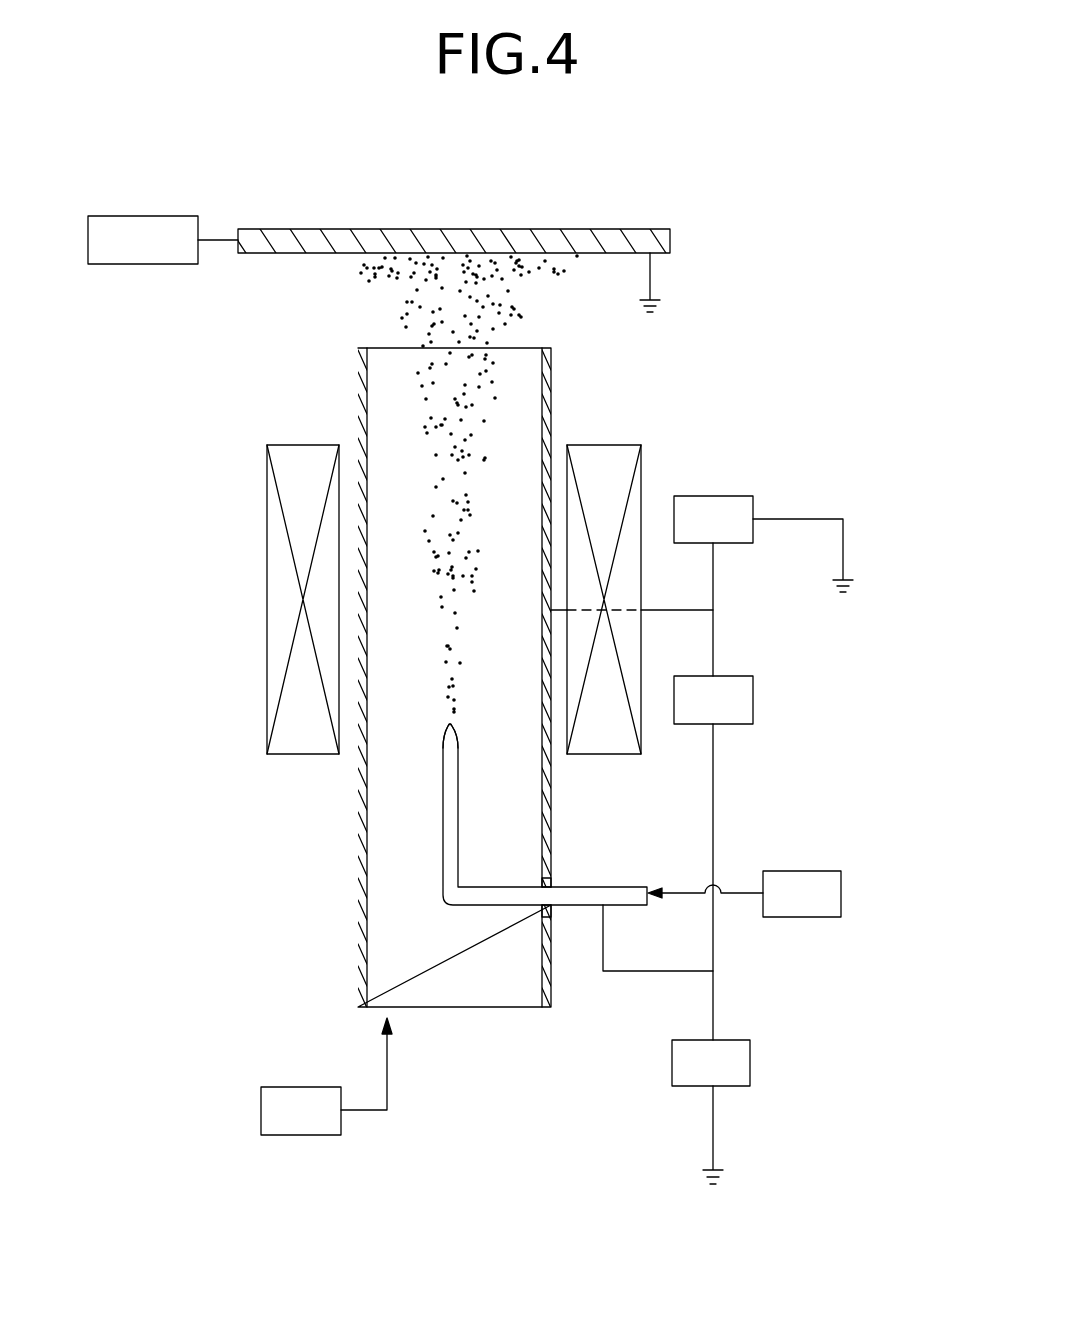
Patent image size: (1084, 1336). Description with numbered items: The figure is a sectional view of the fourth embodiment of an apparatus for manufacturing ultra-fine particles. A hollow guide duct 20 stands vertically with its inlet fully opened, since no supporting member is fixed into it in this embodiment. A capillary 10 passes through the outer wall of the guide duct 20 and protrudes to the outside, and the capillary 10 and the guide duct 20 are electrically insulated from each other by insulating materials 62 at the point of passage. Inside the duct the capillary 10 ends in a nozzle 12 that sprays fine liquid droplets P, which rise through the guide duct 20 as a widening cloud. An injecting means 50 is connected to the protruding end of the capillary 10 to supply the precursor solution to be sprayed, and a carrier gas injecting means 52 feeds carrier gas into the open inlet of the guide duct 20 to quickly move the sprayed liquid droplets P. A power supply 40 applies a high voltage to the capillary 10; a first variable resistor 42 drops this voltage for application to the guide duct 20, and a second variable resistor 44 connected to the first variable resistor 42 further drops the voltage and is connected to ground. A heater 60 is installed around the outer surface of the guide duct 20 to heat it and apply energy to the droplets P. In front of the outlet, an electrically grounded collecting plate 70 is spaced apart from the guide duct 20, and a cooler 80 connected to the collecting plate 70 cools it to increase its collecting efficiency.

The capillary 10 is at (443, 797).
The nozzle 12 is at (447, 738).
The guide duct 20 is at (358, 392).
The power supply 40 is at (750, 1063).
The first variable resistor 42 is at (753, 700).
The second variable resistor 44 is at (753, 509).
The injecting means 50 is at (810, 871).
The carrier gas injecting means 52 is at (298, 1137).
The heater 60 is at (267, 487).
The insulating materials 62 is at (551, 885).
The collecting plate 70 is at (670, 240).
The cooler 80 is at (140, 265).
The sprayed liquid droplets P is at (430, 574).